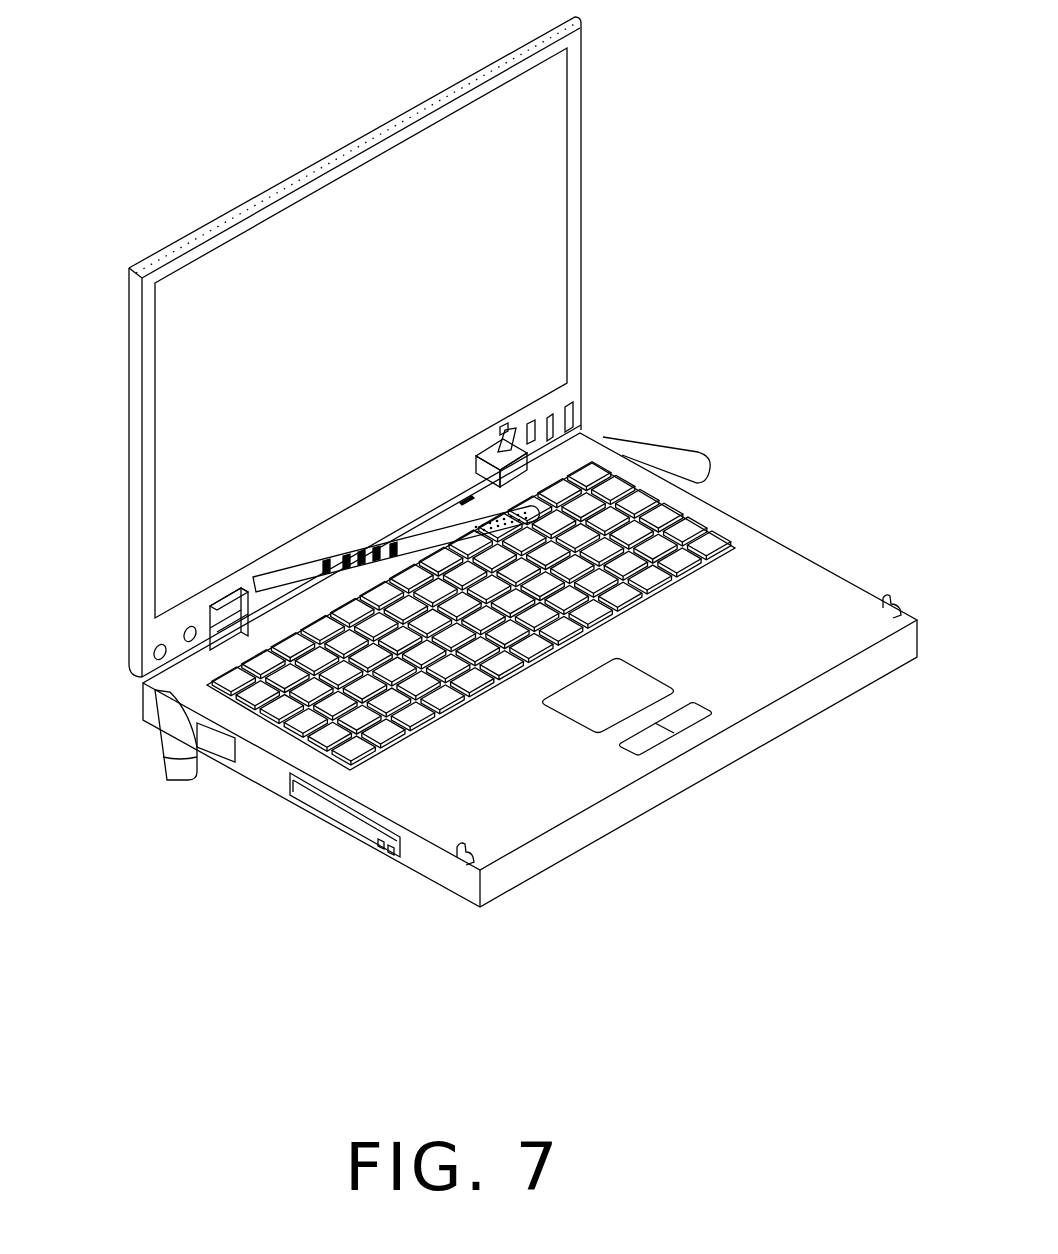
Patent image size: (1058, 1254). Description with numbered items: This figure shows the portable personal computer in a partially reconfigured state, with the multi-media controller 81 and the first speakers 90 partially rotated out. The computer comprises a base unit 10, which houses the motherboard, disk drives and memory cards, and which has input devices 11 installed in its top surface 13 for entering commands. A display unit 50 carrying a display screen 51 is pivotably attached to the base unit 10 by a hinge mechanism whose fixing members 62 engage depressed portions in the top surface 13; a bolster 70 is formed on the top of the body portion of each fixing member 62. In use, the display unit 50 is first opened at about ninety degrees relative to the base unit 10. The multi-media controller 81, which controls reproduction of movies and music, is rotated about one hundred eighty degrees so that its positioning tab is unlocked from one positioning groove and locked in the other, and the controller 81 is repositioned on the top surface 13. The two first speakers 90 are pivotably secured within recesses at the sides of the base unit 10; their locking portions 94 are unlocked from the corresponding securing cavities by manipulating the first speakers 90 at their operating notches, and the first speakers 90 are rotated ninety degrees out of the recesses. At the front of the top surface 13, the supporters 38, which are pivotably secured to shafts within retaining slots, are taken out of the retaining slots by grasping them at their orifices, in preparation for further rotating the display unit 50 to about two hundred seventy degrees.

The base unit 10 is at (575, 836).
The input devices 11 is at (635, 683).
The top surface 13 is at (770, 656).
The supporter 38 is at (458, 860).
The display unit 50 is at (378, 148).
The display screen 51 is at (531, 166).
The fixing member 62 is at (518, 468).
The bolster 70 is at (505, 432).
The multi-media controller 81 is at (603, 443).
The first speaker 90 is at (163, 737).
The locking portion 94 is at (186, 781).